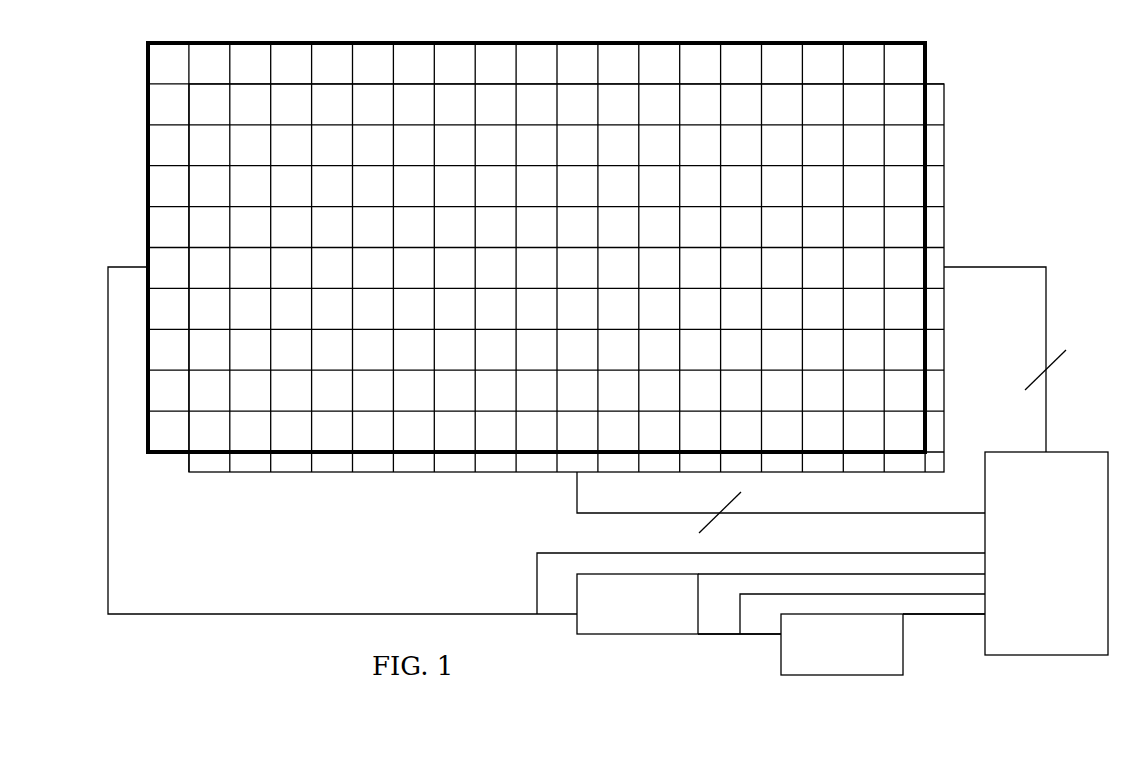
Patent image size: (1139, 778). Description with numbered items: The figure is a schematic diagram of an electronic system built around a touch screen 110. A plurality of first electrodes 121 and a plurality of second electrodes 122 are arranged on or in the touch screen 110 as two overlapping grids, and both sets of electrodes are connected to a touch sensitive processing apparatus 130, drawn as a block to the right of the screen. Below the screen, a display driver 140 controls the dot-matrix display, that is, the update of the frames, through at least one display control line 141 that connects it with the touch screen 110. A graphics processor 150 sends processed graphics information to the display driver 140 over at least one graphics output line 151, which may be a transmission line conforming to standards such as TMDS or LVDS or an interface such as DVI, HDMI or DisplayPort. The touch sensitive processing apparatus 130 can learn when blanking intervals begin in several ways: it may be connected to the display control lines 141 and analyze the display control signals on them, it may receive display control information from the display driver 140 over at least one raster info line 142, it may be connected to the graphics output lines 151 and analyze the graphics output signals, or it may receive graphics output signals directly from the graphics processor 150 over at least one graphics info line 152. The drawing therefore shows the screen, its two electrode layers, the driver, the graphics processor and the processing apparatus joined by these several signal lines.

The touch screen 110 is at (583, 312).
The first electrodes 121 is at (903, 205).
The second electrodes 122 is at (398, 430).
The touch sensitive processing apparatus 130 is at (1060, 562).
The display driver 140 is at (625, 614).
The display control lines 141 is at (148, 614).
The raster info lines 142 is at (740, 573).
The graphics processor 150 is at (830, 654).
The graphics output lines 151 is at (722, 636).
The graphics info lines 152 is at (923, 617).